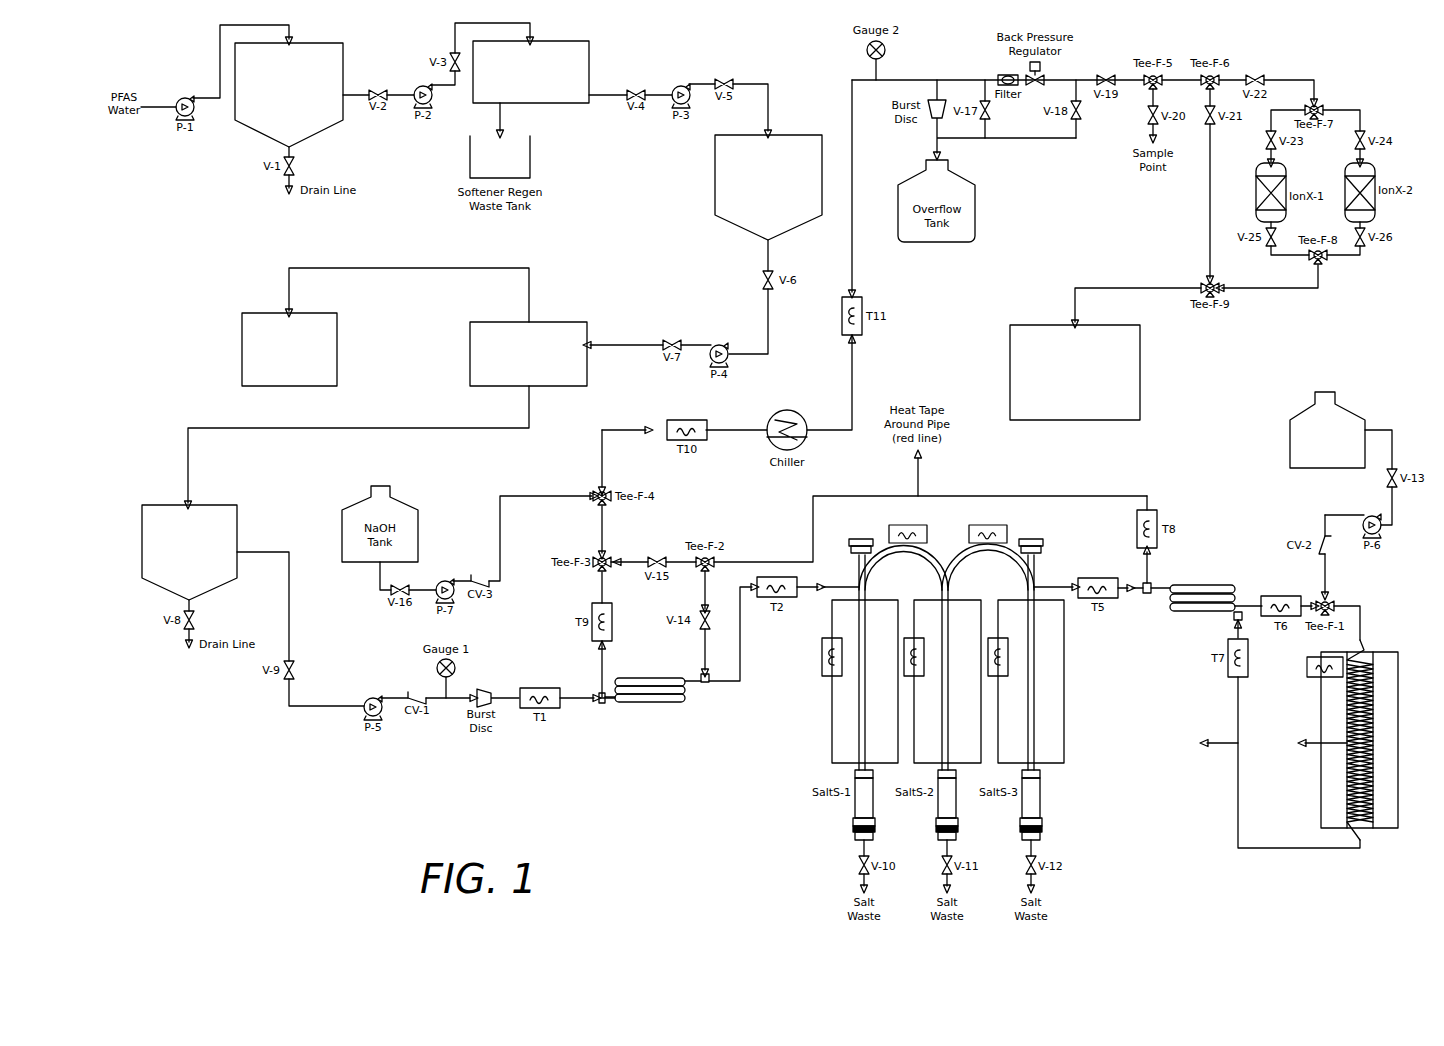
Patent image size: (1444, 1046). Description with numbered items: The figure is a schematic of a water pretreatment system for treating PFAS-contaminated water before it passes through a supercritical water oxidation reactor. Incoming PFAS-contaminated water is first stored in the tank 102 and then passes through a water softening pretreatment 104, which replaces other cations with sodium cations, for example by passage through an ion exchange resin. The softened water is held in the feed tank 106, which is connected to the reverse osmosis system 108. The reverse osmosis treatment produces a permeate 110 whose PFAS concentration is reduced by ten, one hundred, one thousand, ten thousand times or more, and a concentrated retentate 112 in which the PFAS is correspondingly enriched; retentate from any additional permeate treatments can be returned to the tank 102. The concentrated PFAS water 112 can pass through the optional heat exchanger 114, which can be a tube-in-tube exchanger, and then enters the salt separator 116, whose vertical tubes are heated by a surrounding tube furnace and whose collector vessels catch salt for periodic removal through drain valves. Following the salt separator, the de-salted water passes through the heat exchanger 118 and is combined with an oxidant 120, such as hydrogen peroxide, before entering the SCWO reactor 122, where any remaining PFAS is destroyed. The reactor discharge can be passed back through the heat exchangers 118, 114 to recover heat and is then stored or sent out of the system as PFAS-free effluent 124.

The tank 102 is at (247, 123).
The water softening pretreatment 104 is at (589, 63).
The feed tank 106 is at (715, 157).
The reverse osmosis system 108 is at (552, 322).
The PFAS-free water (permeate) tank 110 is at (243, 366).
The retentate 112 is at (237, 513).
The heat exchanger 114 is at (682, 706).
The salt separator 116 is at (828, 718).
The heat exchanger 118 is at (1200, 585).
The oxidant 120 is at (1290, 463).
The reactor furnace 4 122 is at (1318, 783).
The PFAS-free effluent 124 is at (1012, 326).